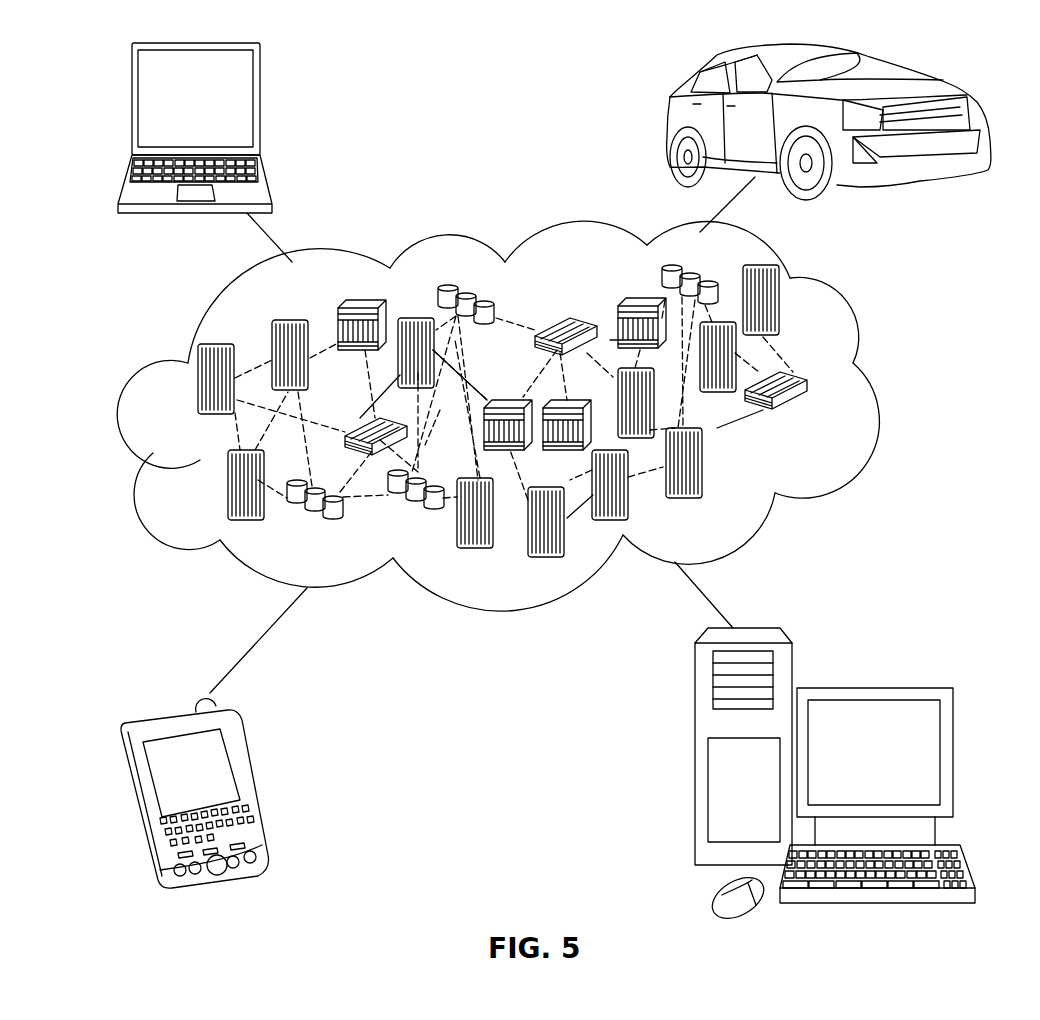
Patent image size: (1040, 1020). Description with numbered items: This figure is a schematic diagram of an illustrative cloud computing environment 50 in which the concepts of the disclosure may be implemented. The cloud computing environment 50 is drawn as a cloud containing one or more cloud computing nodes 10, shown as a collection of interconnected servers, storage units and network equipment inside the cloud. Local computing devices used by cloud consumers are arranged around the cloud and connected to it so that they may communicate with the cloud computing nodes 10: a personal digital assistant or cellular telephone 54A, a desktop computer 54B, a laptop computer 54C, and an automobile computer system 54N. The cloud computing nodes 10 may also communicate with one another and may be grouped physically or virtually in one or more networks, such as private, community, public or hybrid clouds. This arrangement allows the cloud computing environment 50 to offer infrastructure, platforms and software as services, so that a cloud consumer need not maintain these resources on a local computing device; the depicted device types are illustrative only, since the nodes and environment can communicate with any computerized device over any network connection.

The cloud computing node 10 is at (818, 424).
The cloud computing environment 50 is at (522, 416).
The personal digital assistant or cellular telephone 54A is at (252, 787).
The desktop computer 54B is at (872, 688).
The laptop computer 54C is at (261, 107).
The automobile computer system 54N is at (672, 120).